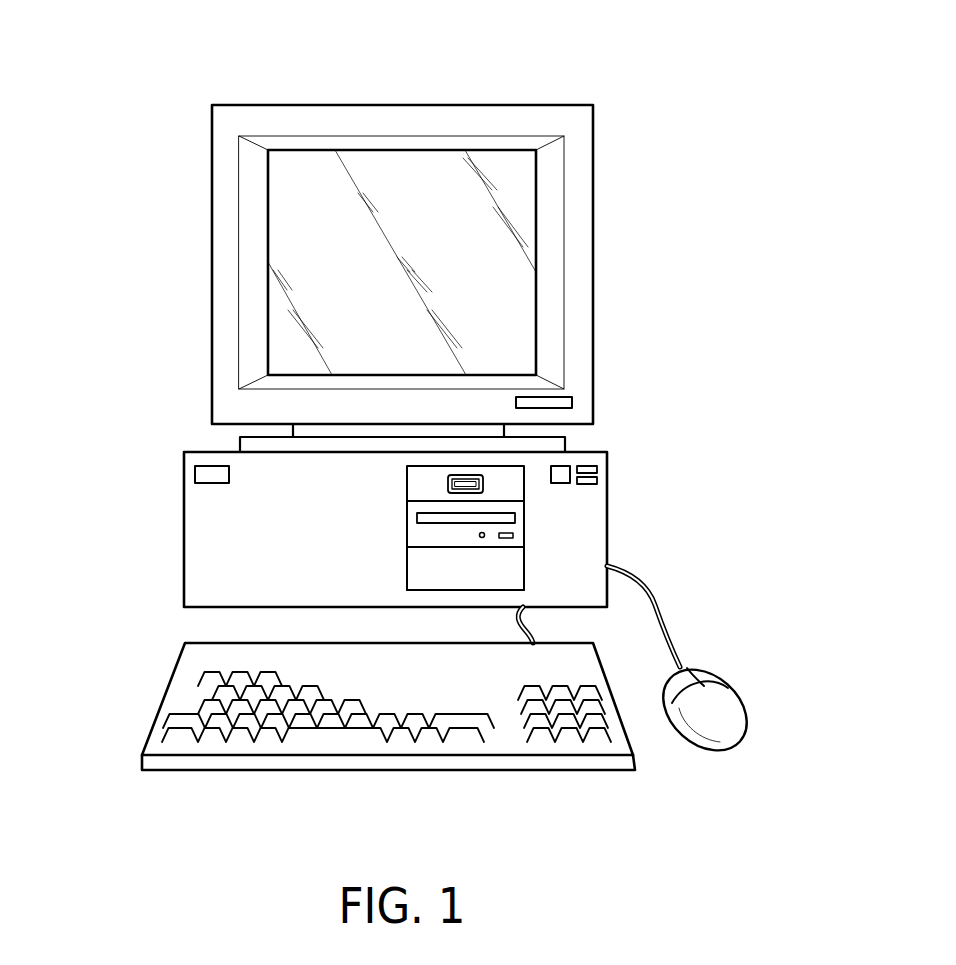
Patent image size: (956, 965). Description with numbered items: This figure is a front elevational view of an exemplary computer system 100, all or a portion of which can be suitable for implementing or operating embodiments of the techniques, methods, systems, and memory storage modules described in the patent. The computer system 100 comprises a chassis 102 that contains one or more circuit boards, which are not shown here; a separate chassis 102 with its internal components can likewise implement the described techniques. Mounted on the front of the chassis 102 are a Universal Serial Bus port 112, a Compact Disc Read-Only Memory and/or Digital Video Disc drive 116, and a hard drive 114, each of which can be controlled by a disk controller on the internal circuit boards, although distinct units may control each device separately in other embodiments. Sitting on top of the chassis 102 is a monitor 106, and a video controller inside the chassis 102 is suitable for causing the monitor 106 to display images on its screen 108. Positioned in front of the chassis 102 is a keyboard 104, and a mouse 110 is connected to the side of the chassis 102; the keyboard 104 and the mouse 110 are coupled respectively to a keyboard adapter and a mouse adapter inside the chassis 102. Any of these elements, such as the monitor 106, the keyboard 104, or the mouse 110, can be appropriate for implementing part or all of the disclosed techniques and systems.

The computer system 100 is at (583, 82).
The chassis 102 is at (184, 531).
The keyboard 104 is at (167, 693).
The monitor 106 is at (289, 105).
The screen 108 is at (318, 267).
The mouse 110 is at (725, 698).
The Universal Serial Bus (USB) port 112 is at (487, 479).
The hard drive 114 is at (517, 566).
The CD-ROM and/or DVD drive 116 is at (517, 524).